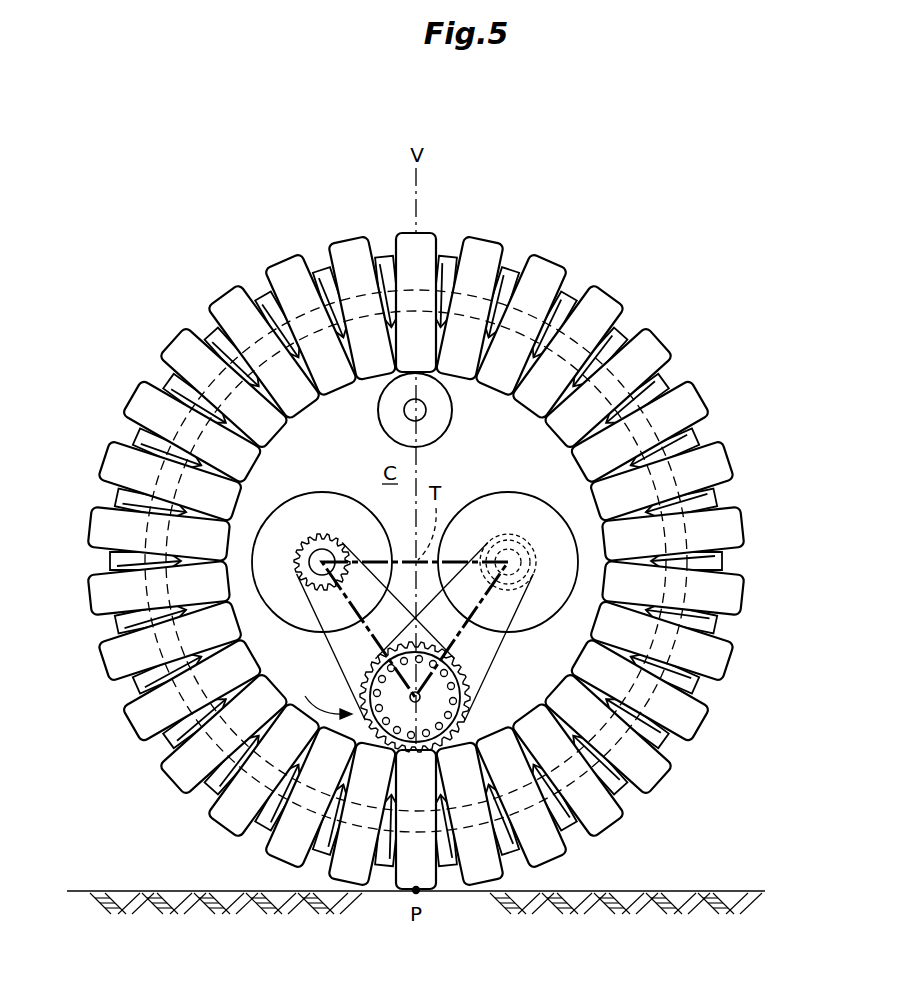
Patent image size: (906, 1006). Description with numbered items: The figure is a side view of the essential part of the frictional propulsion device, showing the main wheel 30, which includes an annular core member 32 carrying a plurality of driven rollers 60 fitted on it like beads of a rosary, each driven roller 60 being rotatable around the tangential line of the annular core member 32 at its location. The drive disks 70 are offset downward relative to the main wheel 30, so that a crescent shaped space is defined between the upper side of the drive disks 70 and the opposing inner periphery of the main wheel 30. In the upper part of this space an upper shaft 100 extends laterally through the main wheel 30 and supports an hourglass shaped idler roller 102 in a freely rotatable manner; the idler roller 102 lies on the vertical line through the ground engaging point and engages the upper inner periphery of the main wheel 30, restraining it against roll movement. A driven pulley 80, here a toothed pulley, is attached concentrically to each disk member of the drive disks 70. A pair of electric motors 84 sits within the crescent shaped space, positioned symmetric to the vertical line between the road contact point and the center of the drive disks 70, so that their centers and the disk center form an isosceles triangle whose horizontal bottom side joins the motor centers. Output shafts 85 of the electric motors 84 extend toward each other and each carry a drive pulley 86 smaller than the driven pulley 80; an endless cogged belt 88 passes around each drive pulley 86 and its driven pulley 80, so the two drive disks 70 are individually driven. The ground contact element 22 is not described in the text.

The ground-contacting pad 22 is at (415, 697).
The main wheel 30 is at (416, 575).
The annular core member 32 is at (570, 336).
The driven roller 60 is at (550, 263).
The drive disk 70 is at (324, 694).
The driven pulley 80 is at (469, 708).
The electric motor 84 is at (313, 498).
The output shaft 85 is at (310, 556).
The drive pulley 86 is at (326, 534).
The endless cogged belt 88 is at (332, 652).
The upper shaft 100 is at (404, 412).
The idler roller 102 is at (444, 420).